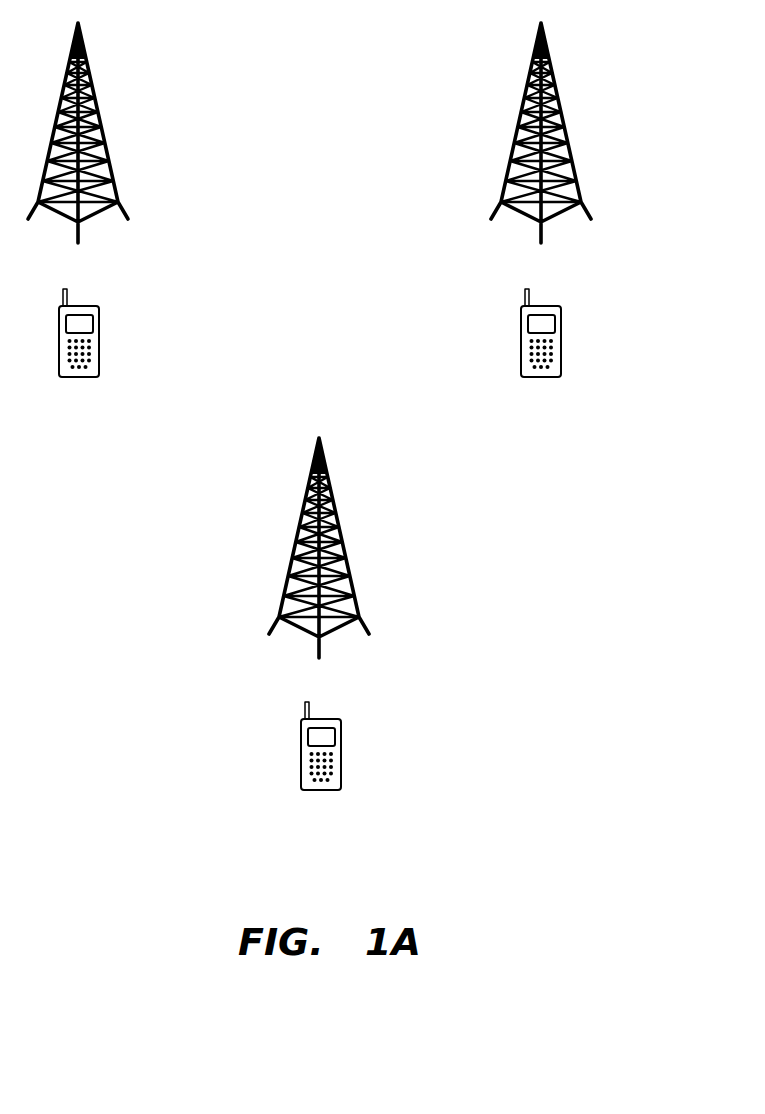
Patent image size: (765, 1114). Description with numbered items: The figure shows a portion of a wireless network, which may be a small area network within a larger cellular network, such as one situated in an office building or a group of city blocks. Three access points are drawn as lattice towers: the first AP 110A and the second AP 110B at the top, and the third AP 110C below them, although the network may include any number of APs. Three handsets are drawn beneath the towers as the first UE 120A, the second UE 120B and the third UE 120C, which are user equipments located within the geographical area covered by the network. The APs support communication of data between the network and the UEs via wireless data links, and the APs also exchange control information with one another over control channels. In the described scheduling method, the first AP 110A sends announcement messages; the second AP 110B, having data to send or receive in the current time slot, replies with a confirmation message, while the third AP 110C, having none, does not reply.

The first AP 110A is at (97, 131).
The second AP 110B is at (560, 131).
The third AP 110C is at (338, 546).
The first UE 120A is at (99, 343).
The second UE 120B is at (561, 343).
The third UE 120C is at (341, 756).